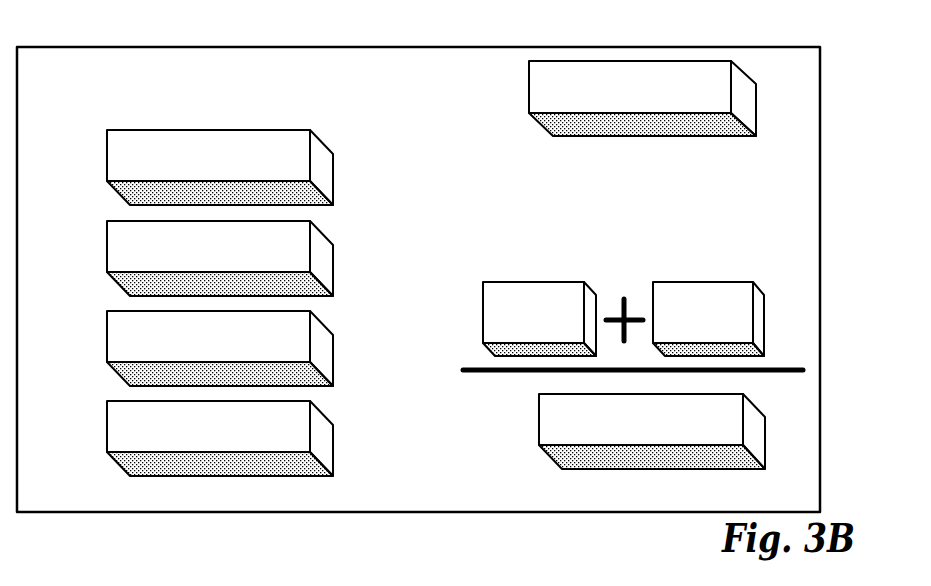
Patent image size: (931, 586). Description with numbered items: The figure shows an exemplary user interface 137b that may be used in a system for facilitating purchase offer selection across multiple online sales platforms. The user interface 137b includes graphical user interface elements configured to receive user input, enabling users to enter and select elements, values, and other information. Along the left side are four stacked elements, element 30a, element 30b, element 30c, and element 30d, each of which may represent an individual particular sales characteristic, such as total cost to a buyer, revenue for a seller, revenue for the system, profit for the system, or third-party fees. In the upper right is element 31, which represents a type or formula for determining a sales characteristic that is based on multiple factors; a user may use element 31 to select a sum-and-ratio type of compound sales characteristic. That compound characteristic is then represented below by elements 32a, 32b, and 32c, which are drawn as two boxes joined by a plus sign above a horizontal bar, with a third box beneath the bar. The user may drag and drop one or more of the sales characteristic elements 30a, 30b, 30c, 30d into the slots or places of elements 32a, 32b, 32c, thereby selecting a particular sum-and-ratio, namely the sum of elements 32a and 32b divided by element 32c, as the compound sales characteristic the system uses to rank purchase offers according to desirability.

The user interface 137b is at (236, 38).
The element 30a is at (122, 163).
The element 30b is at (122, 253).
The element 30c is at (122, 345).
The element 30d is at (122, 435).
The element 31 is at (543, 95).
The element 32a is at (497, 315).
The element 32b is at (811, 300).
The element 32c is at (553, 427).